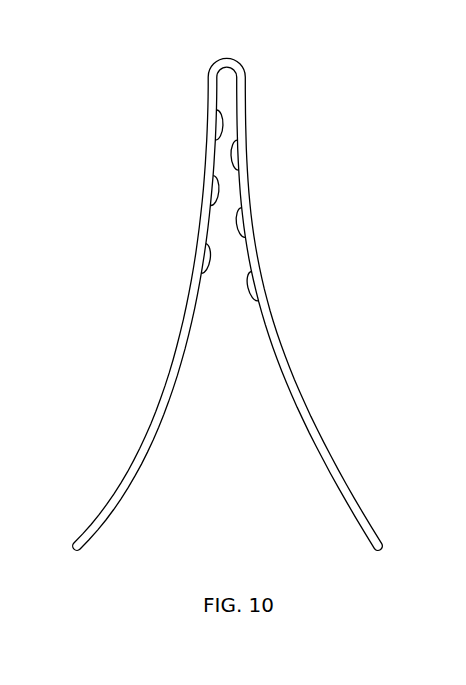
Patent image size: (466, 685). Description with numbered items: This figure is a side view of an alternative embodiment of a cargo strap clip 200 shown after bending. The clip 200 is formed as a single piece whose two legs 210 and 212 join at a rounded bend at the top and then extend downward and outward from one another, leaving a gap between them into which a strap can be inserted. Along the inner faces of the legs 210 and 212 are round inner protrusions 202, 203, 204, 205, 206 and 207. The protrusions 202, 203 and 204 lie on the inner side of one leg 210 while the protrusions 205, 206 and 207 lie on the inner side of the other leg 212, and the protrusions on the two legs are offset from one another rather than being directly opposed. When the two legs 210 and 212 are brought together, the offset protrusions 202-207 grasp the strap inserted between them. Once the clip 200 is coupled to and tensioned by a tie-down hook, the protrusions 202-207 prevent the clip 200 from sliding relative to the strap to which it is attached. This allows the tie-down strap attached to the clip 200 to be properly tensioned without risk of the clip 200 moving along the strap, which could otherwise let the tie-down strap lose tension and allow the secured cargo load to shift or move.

The cargo strap clip 200 is at (221, 282).
The protrusion 202 is at (207, 257).
The protrusion 203 is at (217, 187).
The protrusion 204 is at (220, 125).
The protrusion 205 is at (237, 157).
The protrusion 206 is at (240, 220).
The protrusion 207 is at (250, 285).
The leg 210 is at (150, 425).
The leg 212 is at (300, 412).